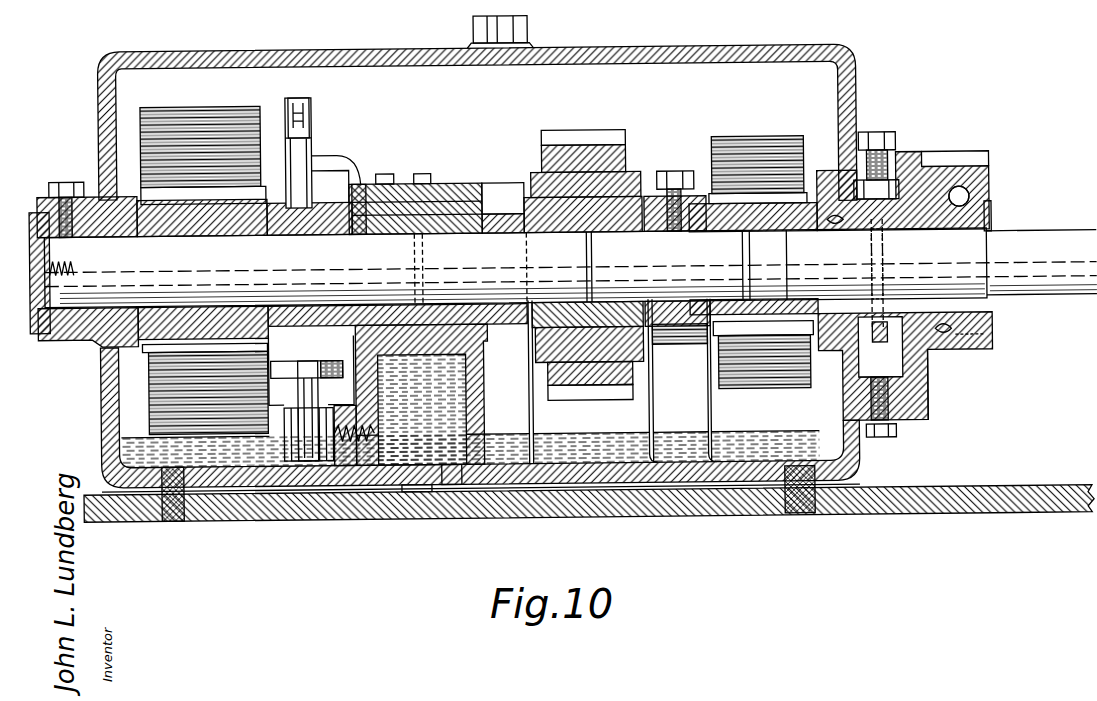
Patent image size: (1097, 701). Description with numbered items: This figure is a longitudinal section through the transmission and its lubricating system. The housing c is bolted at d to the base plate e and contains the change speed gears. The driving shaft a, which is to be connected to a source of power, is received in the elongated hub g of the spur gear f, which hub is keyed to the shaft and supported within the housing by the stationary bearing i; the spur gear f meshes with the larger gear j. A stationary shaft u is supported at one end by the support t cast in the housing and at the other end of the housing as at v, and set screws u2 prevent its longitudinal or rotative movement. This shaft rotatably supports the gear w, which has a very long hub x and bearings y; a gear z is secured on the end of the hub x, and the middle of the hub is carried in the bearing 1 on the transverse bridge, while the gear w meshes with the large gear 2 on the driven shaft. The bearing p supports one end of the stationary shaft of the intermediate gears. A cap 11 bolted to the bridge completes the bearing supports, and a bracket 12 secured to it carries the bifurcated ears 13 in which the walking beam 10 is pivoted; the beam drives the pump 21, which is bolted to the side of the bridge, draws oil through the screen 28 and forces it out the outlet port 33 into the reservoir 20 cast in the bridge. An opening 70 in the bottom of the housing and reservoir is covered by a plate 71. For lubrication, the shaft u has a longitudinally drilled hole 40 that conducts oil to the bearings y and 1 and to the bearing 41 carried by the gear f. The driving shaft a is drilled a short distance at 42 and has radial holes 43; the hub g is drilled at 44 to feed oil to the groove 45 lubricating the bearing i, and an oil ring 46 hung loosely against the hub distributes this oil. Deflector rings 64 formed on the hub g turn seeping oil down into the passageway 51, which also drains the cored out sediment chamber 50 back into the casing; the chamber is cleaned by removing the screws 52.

The housing c is at (625, 48).
The base plate e is at (930, 517).
The driving shaft a is at (1038, 278).
The shaft support v is at (55, 338).
The longitudinally drilled hole 40 is at (88, 345).
The bearings y is at (128, 195).
The gear w is at (180, 200).
The set screws u2 is at (58, 178).
The large gear 2 is at (190, 103).
The hub x is at (342, 200).
The walking beam 10 is at (295, 150).
The bifurcated ears 13 is at (313, 108).
The bracket 12 is at (325, 155).
The cap 11 is at (385, 182).
The stationary shaft u is at (452, 182).
The gear z is at (580, 150).
The bearing 41 is at (728, 215).
The larger gear j is at (760, 180).
The spur gear f is at (760, 230).
The support t is at (708, 410).
The bearing 1 is at (487, 350).
The bearing p is at (470, 405).
The pump 21 is at (280, 448).
The screen 28 is at (300, 450).
The outlet port 33 is at (345, 445).
The reservoir 20 is at (330, 487).
The opening 70 is at (415, 490).
The plate 71 is at (450, 490).
The bolts d is at (165, 520).
The drilled hole 44 is at (925, 183).
The groove 45 is at (965, 178).
The deflector rings 64 is at (972, 200).
The drilled portion 42 is at (1000, 222).
The screws 52 is at (882, 136).
The hole 51 is at (962, 342).
The hub g is at (897, 215).
The stationary bearing i is at (834, 224).
The radial holes 43 is at (878, 280).
The cored out chamber 50 is at (915, 372).
The oil ring 46 is at (928, 355).